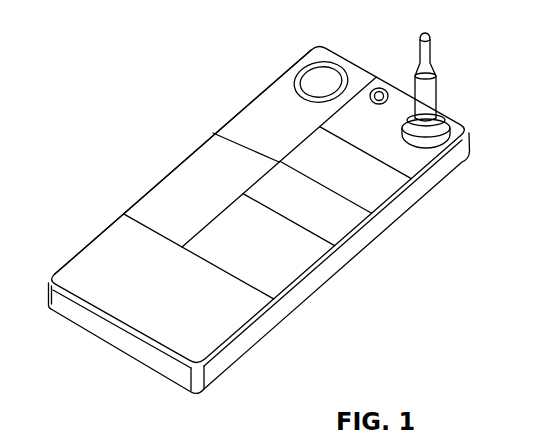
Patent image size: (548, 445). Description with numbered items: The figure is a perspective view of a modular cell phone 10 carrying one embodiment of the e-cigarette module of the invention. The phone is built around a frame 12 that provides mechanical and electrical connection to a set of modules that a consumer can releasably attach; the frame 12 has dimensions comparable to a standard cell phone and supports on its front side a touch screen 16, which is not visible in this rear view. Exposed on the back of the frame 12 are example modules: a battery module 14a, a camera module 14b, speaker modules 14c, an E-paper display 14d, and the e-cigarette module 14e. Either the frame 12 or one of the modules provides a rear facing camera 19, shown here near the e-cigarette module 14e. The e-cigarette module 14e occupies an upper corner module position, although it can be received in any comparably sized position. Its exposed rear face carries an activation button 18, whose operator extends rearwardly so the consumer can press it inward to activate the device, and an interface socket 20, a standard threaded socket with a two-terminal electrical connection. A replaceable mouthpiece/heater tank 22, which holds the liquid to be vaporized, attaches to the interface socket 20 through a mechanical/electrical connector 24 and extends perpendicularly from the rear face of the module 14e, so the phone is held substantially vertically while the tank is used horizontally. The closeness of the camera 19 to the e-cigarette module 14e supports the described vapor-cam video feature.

The modular cell phone 10 is at (95, 37).
The frame 12 is at (317, 279).
The battery module 14a is at (90, 254).
The camera module 14b is at (247, 113).
The speaker modules 14c is at (387, 190).
The E-paper display 14d is at (350, 223).
The e-cigarette module 14e is at (424, 163).
The touch screen 16 is at (275, 340).
The activation button 18 is at (380, 87).
The rear facing camera 19 is at (298, 64).
The interface socket 20 is at (445, 134).
The mouthpiece/heater tank 22 is at (430, 52).
The mechanical/electrical connector 24 is at (449, 110).